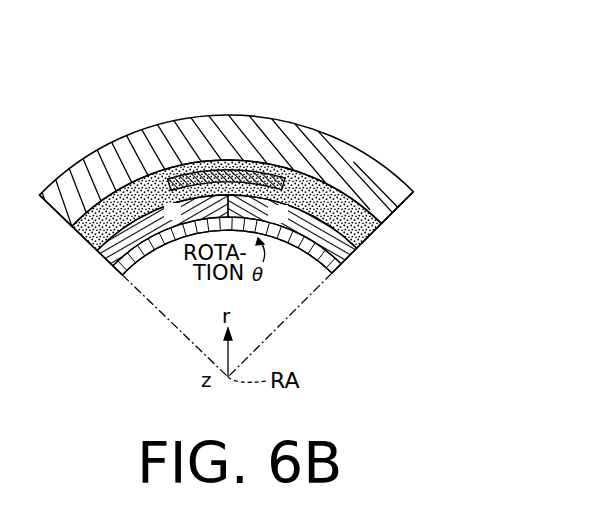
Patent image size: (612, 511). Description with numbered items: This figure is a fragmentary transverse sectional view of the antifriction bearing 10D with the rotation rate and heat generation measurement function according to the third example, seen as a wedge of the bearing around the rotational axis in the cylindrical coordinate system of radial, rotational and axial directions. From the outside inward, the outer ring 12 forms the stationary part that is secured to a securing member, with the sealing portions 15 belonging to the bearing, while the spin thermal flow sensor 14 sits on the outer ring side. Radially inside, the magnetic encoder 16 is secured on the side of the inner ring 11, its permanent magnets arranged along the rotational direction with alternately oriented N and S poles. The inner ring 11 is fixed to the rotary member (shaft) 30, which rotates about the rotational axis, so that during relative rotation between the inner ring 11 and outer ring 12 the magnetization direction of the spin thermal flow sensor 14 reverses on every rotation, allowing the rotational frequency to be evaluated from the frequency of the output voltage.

The antifriction bearing with rotation rate and heat generation measurement function 10D is at (407, 93).
The inner ring 11 is at (340, 270).
The outer ring 12 is at (179, 138).
The spin thermal flow sensor 14 is at (236, 174).
The sealing portions 15 is at (112, 150).
The magnetic encoder 16 is at (104, 267).
The rotary member (shaft) 30 is at (272, 316).